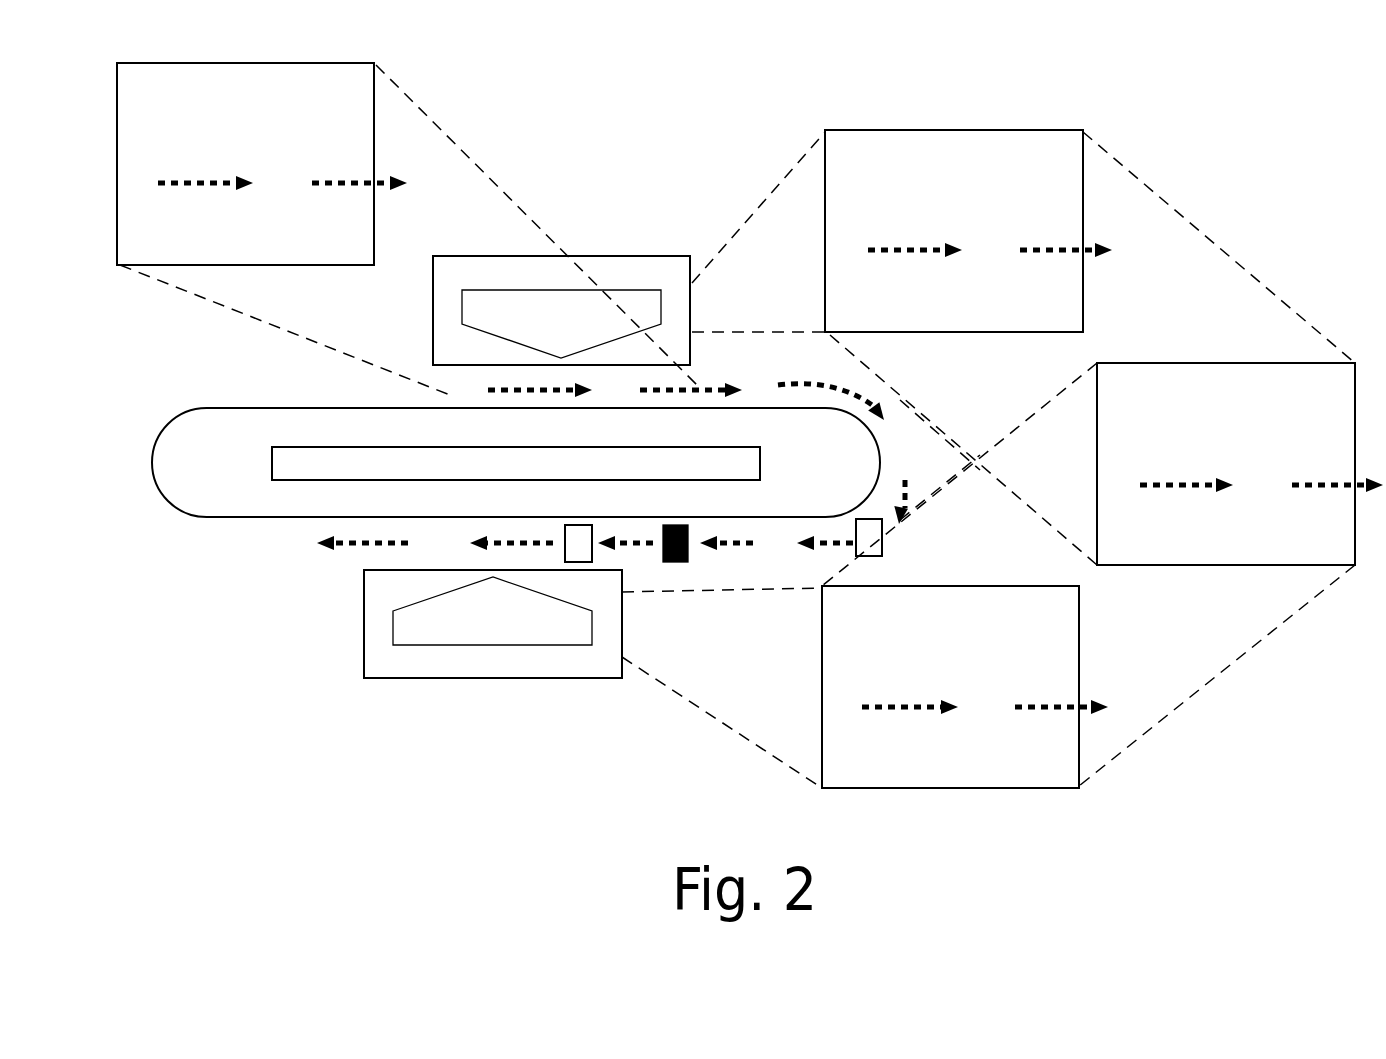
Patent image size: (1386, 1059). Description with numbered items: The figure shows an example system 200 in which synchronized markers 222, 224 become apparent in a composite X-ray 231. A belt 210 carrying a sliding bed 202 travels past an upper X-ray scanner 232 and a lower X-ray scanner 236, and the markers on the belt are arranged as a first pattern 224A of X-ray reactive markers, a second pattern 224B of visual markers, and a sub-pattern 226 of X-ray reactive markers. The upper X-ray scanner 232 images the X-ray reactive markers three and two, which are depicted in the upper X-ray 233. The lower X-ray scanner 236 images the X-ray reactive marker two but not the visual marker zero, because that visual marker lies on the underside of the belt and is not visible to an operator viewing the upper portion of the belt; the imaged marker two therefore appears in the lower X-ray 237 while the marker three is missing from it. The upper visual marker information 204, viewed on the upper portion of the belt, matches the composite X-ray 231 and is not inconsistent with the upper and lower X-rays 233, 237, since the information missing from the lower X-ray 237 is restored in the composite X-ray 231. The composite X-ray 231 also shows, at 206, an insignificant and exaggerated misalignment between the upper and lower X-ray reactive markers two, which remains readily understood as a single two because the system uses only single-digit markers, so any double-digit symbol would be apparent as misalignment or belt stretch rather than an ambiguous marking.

The scanning system 200 is at (870, 32).
The upper visual marker information 204 is at (262, 164).
The upper X-ray scanner 232 is at (561, 310).
The upper X-ray 233 is at (968, 231).
The composite X-ray 231 is at (1240, 464).
The misaligned marker in composite image 206 is at (1261, 442).
The lower X-ray 237 is at (965, 687).
The lower X-ray scanner 236 is at (493, 624).
The belt 210 is at (516, 462).
The sliding bed 202 is at (516, 463).
The X-ray reactive markers 222 is at (756, 360).
The first pattern 224A is at (914, 380).
The second pattern 224B is at (918, 560).
The synchronized markers 224 is at (679, 578).
The sub-pattern 226 is at (323, 575).